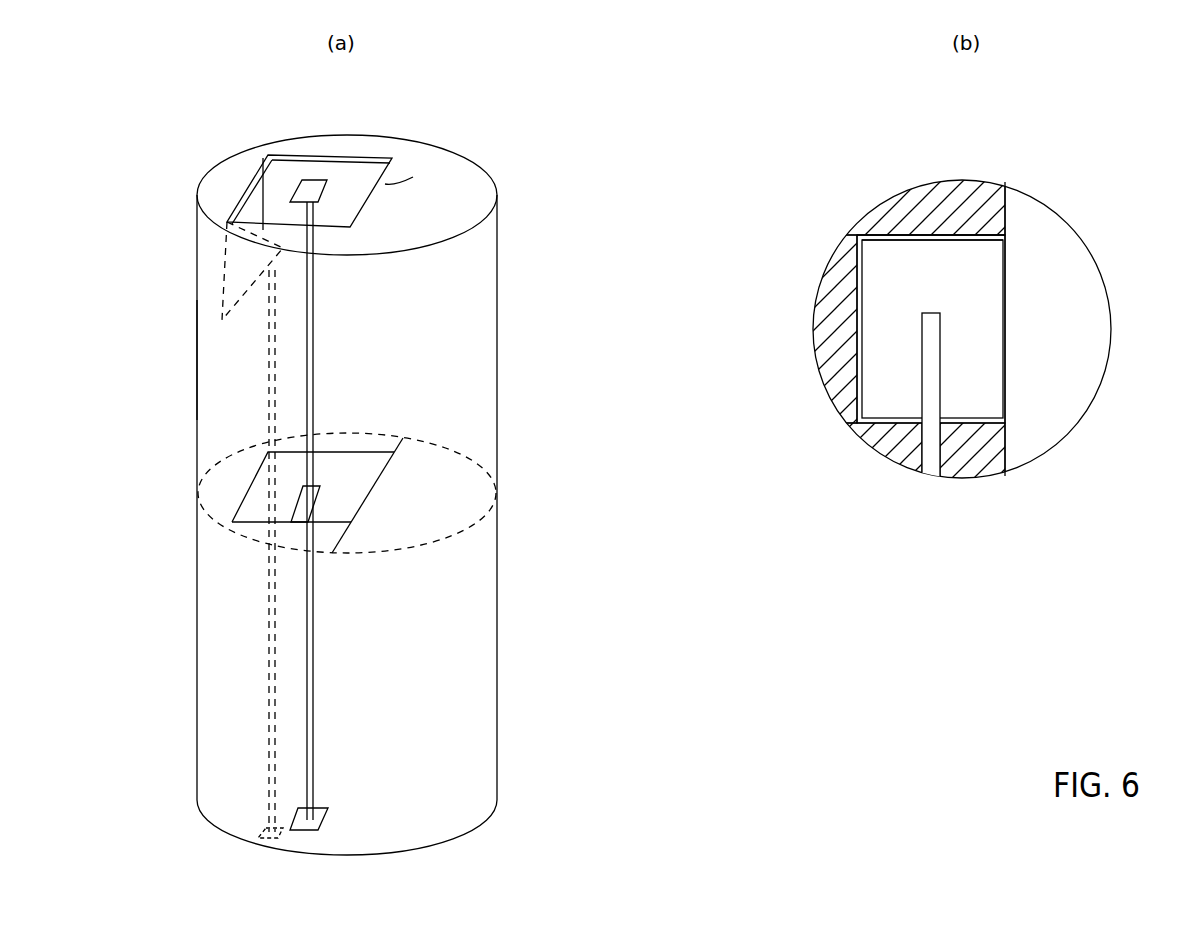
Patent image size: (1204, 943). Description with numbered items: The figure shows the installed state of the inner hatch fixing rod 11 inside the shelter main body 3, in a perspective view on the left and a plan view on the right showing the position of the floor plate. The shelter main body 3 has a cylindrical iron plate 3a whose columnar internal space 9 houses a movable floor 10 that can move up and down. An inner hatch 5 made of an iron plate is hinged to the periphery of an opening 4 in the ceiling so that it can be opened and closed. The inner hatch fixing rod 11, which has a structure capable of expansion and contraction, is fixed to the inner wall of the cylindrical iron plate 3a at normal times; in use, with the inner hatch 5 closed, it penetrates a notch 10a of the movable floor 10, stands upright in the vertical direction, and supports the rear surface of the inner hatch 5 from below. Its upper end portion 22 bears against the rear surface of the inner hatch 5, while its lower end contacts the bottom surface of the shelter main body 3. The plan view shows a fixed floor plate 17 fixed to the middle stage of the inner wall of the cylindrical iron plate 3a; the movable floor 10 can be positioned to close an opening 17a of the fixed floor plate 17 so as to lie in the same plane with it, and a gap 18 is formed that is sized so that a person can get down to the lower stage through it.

The shelter main body 3 is at (498, 150).
The cylindrical iron plate 3a is at (200, 358).
The opening 4 is at (285, 167).
The inner hatch 5 is at (385, 184).
The internal space 9 is at (478, 677).
The movable floor 10 is at (257, 490).
The notch 10a is at (297, 508).
The inner hatch fixing rod 11 is at (313, 333).
The fixed floor plate 17 is at (982, 188).
The opening 17a is at (1007, 237).
The gap 18 is at (1088, 298).
The upper end portion 22 is at (325, 193).